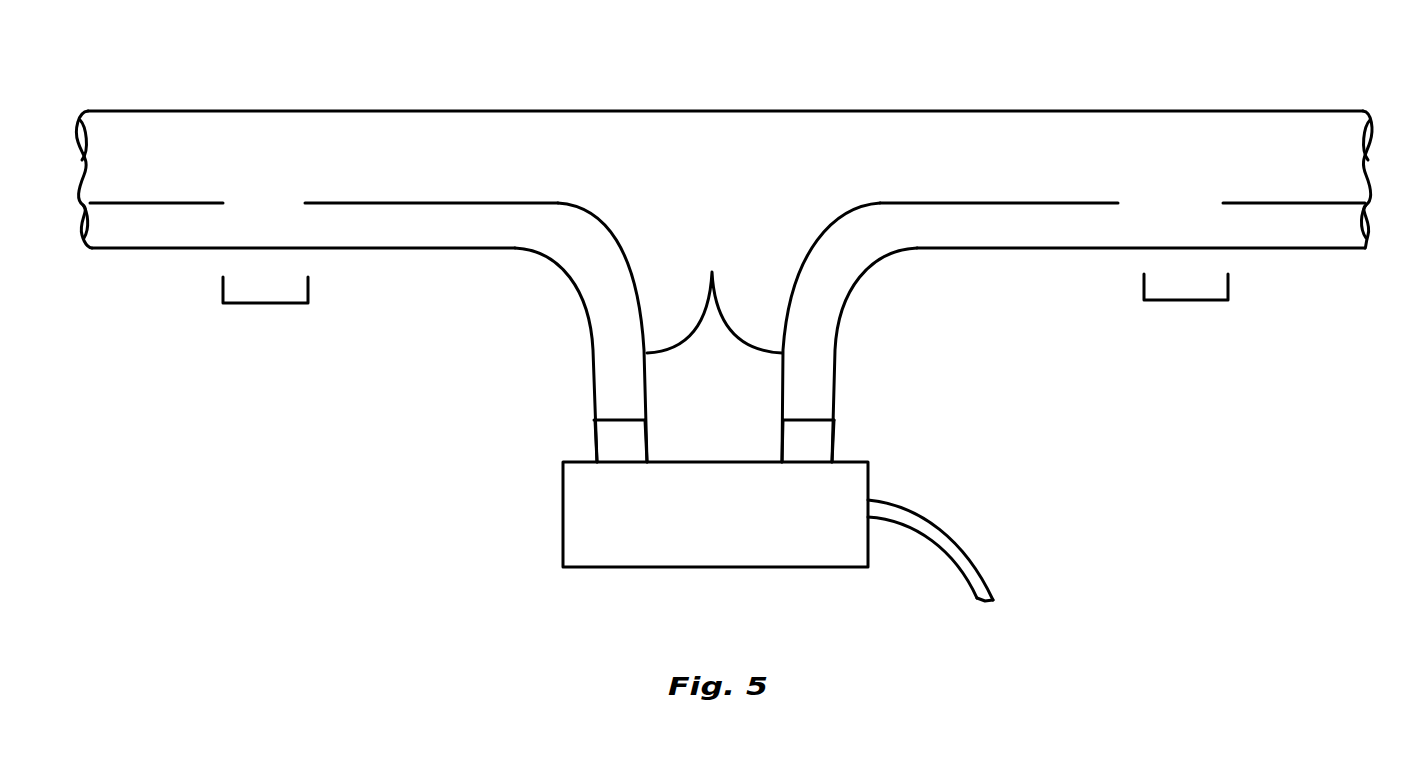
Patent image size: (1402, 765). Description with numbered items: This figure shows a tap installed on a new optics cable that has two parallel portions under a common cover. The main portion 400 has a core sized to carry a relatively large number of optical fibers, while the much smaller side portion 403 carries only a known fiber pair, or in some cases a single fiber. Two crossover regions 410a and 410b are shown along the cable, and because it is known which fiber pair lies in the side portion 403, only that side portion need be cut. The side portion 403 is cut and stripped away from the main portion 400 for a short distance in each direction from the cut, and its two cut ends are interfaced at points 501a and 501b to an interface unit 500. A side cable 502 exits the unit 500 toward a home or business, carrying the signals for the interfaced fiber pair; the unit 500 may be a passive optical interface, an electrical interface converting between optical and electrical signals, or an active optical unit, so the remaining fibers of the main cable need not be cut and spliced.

The portion 400 is at (772, 110).
The side portion 403 is at (714, 295).
The crossover region 410a is at (263, 303).
The crossover region 410b is at (1183, 300).
The interface unit 500 is at (563, 525).
The point 501a is at (595, 442).
The point 501b is at (832, 442).
The side cable 502 is at (938, 513).